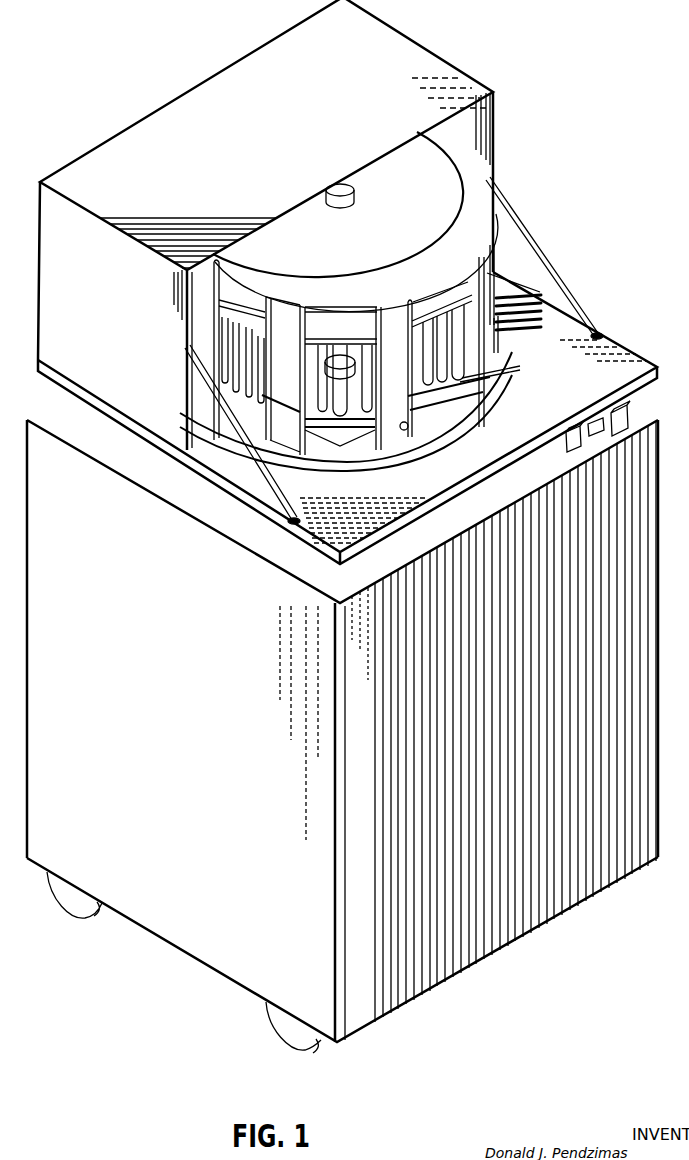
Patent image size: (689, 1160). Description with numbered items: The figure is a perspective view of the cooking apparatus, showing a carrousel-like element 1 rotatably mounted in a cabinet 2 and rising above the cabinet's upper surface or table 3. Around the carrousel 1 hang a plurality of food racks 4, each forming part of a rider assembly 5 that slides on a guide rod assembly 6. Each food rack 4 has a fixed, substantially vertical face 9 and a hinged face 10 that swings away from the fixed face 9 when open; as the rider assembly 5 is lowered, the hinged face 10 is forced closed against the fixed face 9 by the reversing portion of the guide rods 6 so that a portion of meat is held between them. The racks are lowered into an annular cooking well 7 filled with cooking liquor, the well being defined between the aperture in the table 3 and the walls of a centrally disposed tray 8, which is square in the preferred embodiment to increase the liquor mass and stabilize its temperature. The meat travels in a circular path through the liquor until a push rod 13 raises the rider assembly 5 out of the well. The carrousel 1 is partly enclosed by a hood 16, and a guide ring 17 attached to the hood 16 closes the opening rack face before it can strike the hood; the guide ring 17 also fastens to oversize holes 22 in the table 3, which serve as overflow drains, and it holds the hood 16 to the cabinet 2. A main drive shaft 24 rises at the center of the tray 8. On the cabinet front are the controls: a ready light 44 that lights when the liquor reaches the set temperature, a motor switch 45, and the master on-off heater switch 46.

The carrousel-like element 1 is at (458, 178).
The cabinet 2 is at (521, 60).
The table 3 is at (603, 358).
The food rack 4 is at (212, 317).
The rider assembly 5 is at (491, 256).
The guide rod assembly 6 is at (466, 283).
The cooking well 7 is at (290, 448).
The tray 8 is at (292, 388).
The fixed face of the food rack 9 is at (423, 348).
The hinged face of the food rack 10 is at (453, 418).
The push rod 13 is at (446, 289).
The hood 16 is at (413, 49).
The guide ring 17 is at (508, 212).
The oversize holes 22 is at (316, 523).
The main drive shaft 24 is at (352, 298).
The ready light 44 is at (622, 444).
The motor switch 45 is at (630, 410).
The master on-off switch 46 is at (584, 449).